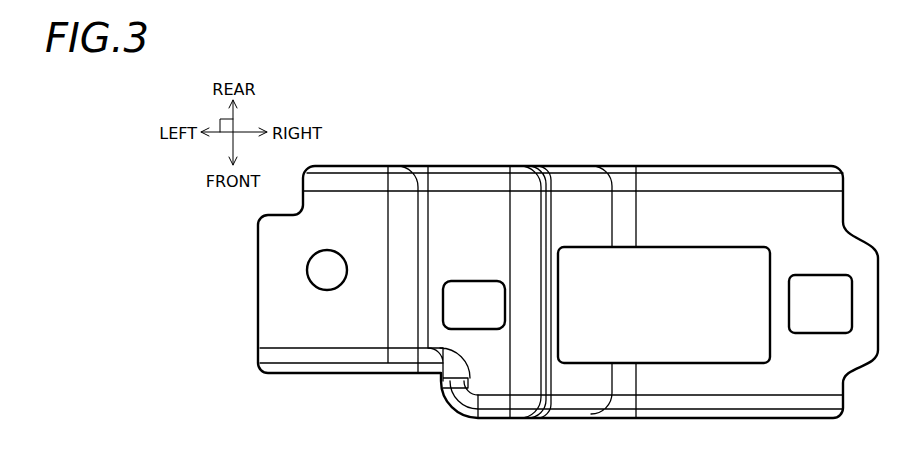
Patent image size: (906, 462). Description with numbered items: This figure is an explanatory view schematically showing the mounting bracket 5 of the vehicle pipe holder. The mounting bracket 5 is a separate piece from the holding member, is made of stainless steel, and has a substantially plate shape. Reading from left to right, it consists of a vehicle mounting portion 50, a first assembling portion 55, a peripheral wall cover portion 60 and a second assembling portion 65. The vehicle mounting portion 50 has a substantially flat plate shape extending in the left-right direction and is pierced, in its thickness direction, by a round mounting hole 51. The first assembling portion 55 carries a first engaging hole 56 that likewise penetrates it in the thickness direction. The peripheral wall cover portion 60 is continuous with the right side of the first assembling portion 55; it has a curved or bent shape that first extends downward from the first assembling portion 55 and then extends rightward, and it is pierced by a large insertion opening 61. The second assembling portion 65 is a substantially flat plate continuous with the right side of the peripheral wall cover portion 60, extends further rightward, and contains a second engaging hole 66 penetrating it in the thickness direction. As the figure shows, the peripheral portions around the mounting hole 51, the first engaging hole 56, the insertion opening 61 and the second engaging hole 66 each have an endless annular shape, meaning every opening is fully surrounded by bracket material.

The mounting bracket 5 is at (829, 150).
The vehicle mounting portion 50 is at (360, 185).
The mounting hole 51 is at (333, 280).
The first assembling portion 55 is at (479, 173).
The first engaging hole 56 is at (475, 312).
The peripheral wall cover portion 60 is at (702, 172).
The insertion opening 61 is at (655, 350).
The second assembling portion 65 is at (789, 180).
The second engaging hole 66 is at (812, 320).